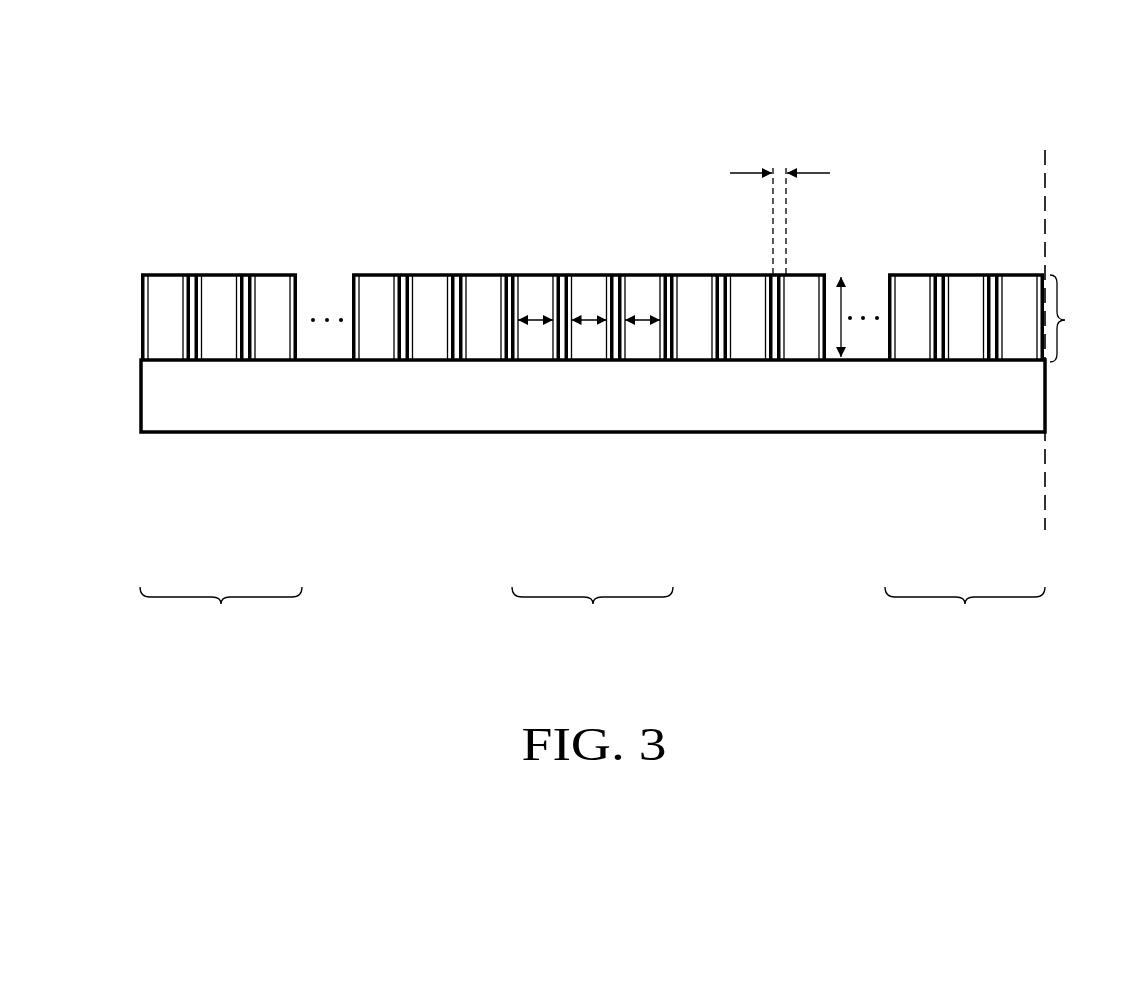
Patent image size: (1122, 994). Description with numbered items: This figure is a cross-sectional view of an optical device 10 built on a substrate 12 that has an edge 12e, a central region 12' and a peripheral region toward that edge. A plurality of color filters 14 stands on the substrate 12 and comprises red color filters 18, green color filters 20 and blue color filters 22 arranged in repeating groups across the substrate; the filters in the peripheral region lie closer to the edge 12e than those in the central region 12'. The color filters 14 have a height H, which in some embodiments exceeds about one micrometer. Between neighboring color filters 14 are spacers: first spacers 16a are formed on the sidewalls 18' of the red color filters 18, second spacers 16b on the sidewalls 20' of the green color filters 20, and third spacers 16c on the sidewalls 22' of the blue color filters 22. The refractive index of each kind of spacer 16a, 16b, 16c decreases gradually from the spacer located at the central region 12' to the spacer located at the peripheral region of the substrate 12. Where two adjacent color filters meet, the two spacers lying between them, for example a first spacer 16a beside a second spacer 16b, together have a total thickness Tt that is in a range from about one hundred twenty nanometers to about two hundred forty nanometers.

The optical device 10 is at (73, 139).
The substrate 12 is at (622, 397).
The central region 12' is at (592, 615).
The edge 12e is at (1048, 358).
The color filters 14 is at (622, 318).
The first spacers 16a is at (145, 353).
The second spacers 16b is at (198, 353).
The third spacers 16c is at (252, 353).
The red color filters 18 is at (539, 278).
The green color filters 20 is at (592, 278).
The blue color filters 22 is at (646, 286).
The sidewalls of the red color filters 18' is at (519, 247).
The sidewalls of the green color filters 20' is at (575, 232).
The sidewalls of the blue color filters 22' is at (628, 247).
The height of the color filters H is at (844, 308).
The total thickness Tt is at (780, 203).